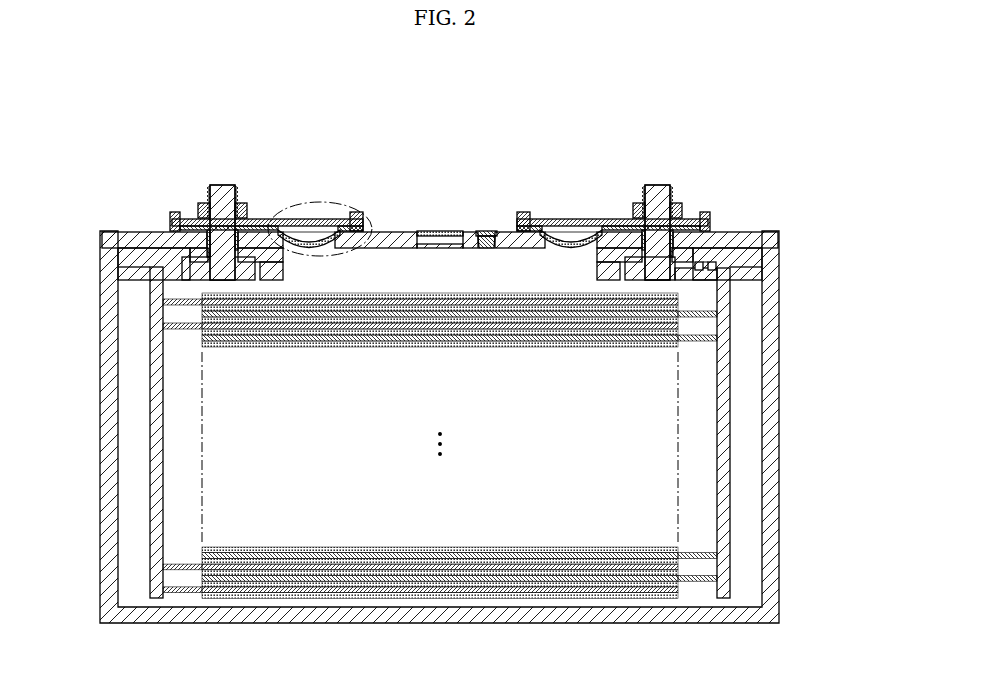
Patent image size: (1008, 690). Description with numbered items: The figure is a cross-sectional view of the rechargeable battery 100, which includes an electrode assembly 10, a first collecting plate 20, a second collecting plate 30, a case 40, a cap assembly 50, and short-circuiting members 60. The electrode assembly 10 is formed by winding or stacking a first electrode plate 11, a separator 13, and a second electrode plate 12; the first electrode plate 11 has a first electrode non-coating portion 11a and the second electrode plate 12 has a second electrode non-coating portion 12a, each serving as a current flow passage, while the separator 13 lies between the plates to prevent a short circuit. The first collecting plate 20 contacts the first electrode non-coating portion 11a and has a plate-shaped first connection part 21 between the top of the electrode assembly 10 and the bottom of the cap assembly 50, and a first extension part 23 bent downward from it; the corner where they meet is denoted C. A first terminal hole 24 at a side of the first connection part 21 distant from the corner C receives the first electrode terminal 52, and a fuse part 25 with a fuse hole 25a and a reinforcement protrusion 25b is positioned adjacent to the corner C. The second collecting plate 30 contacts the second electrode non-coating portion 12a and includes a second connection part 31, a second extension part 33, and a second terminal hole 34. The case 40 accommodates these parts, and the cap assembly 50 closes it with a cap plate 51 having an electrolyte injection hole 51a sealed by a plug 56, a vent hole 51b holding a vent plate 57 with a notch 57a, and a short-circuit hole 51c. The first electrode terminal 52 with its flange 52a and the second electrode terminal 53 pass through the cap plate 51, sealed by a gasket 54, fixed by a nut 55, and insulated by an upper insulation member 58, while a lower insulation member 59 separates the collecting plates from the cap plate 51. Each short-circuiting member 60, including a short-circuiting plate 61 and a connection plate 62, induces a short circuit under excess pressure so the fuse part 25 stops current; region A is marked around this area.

The rechargeable battery 100 is at (743, 104).
The electrode assembly 10 is at (530, 612).
The first electrode plate 11 is at (459, 495).
The first electrode non-coating portion 11a is at (700, 582).
The second electrode plate 12 is at (420, 489).
The second electrode non-coating portion 12a is at (185, 594).
The separator 13 is at (458, 600).
The first collecting plate 20 is at (754, 371).
The first connection part 21 is at (683, 250).
The first extension part 23 is at (731, 450).
The first terminal hole 24 is at (666, 282).
The fuse part 25 is at (748, 207).
The fuse hole 25a is at (716, 262).
The reinforcement protrusion 25b is at (703, 262).
The corner C is at (748, 258).
The second collecting plate 30 is at (146, 386).
The second connection part 31 is at (162, 255).
The second extension part 33 is at (153, 462).
The second terminal hole 34 is at (218, 282).
The case 40 is at (770, 340).
The cap assembly 50 is at (440, 189).
The cap plate 51 is at (440, 216).
The electrolyte injection hole 51a is at (515, 248).
The vent hole 51b is at (440, 248).
The short-circuit hole 51c is at (316, 232).
The first electrode terminal 52 is at (657, 185).
The flange 52a is at (628, 266).
The second electrode terminal 53 is at (220, 185).
The gasket 54 is at (178, 212).
The nut 55 is at (240, 203).
The plug 56 is at (486, 248).
The vent plate 57 is at (448, 205).
The notch 57a is at (440, 231).
The upper insulation member 58 is at (362, 213).
The lower insulation member 59 is at (120, 258).
The short-circuiting member 60 is at (435, 206).
The short-circuiting plate 61 is at (320, 244).
The connection plate 62 is at (282, 219).
The region A is at (306, 203).